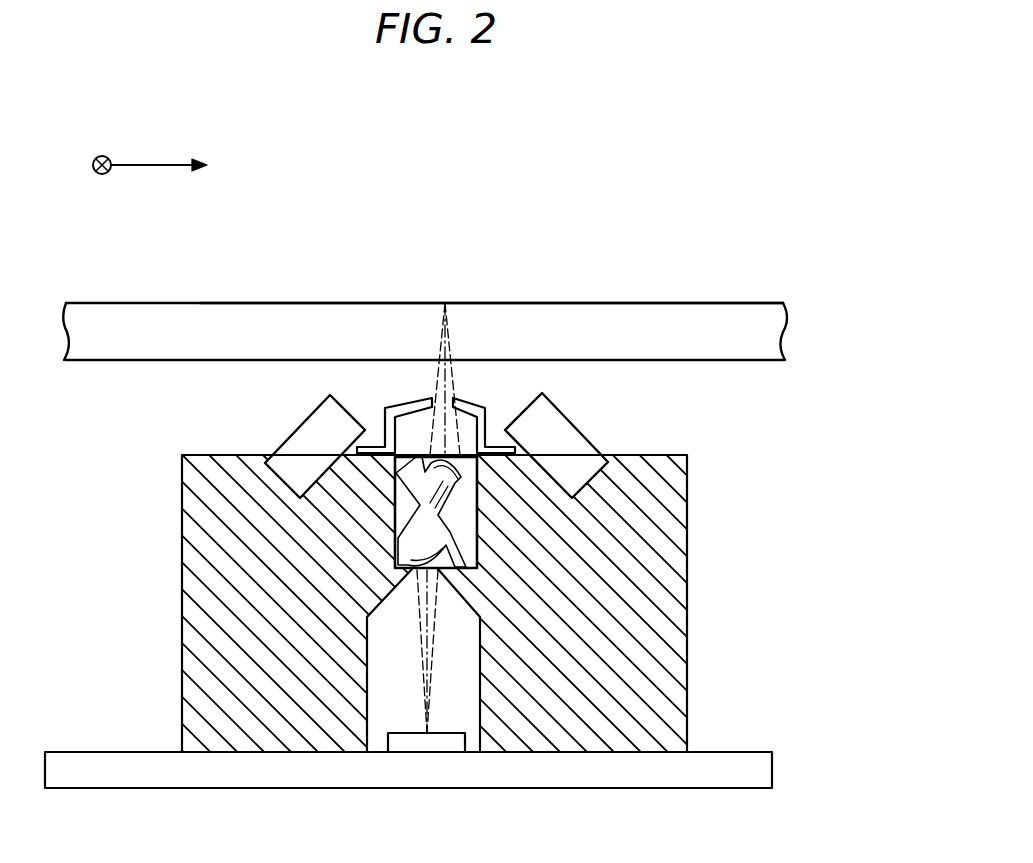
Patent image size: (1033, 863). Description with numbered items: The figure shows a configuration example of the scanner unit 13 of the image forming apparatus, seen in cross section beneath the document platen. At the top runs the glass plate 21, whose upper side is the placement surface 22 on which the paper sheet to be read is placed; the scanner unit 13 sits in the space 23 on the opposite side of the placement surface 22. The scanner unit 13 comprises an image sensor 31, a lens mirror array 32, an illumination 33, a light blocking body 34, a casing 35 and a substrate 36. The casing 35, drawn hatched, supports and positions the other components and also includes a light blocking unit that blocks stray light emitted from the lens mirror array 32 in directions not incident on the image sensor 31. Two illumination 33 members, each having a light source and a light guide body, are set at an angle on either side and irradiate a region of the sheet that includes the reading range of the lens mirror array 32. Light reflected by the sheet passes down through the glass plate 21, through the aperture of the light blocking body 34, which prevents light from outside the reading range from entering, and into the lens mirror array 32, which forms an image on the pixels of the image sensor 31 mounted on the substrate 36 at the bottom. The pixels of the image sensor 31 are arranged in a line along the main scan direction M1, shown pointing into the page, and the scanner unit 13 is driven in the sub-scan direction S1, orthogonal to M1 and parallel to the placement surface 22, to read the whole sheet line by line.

The scanner unit 13 is at (481, 541).
The glass plate 21 is at (161, 310).
The placement surface 22 is at (247, 302).
The space 23 is at (143, 440).
The image sensor 31 is at (428, 753).
The lens mirror array 32 is at (398, 528).
The illumination 33 is at (293, 432).
The light blocking body 34 is at (404, 400).
The casing 35 is at (192, 663).
The substrate 36 is at (745, 762).
The main scan direction M1 is at (103, 155).
The sub-scan direction S1 is at (159, 153).